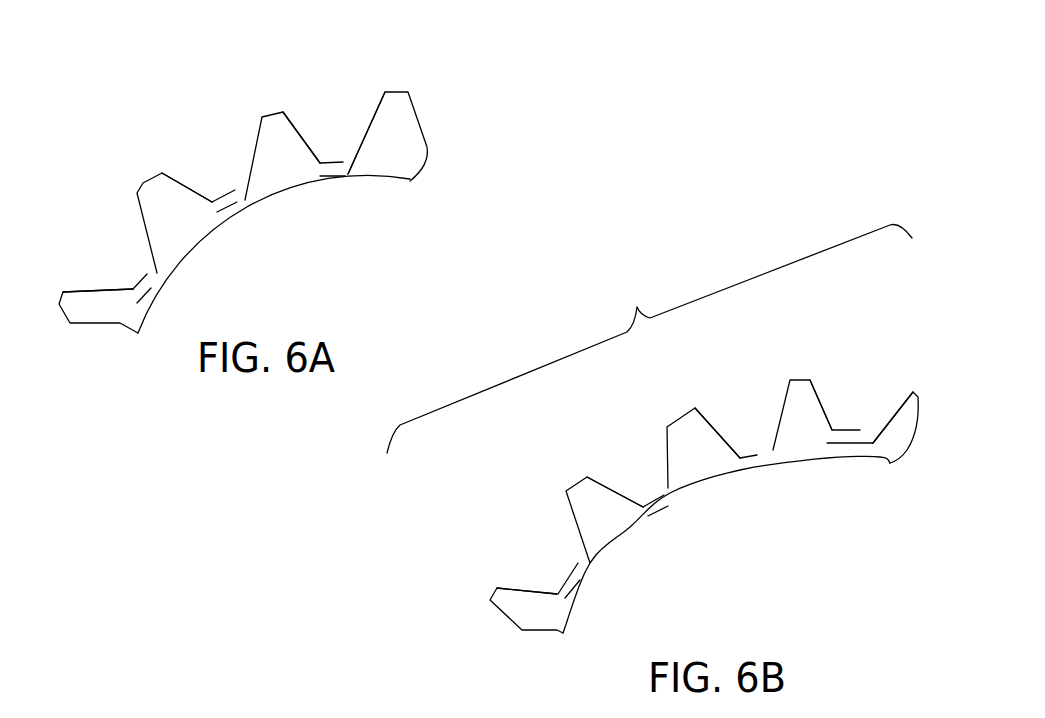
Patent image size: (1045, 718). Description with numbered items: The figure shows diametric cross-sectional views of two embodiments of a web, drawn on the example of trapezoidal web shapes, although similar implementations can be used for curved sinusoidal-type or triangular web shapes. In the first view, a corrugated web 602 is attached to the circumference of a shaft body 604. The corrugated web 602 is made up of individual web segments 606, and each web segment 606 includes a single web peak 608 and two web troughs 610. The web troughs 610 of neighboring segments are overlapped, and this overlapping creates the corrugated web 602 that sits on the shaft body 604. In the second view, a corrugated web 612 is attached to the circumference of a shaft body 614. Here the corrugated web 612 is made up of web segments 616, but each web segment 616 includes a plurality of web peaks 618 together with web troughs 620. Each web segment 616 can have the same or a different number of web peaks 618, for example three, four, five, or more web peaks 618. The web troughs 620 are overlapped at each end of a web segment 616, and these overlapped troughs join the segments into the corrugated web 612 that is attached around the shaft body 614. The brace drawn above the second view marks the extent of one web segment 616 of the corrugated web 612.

In FIG. 6A, the corrugated web 602 is at (415, 120).
In FIG. 6A, the shaft body 604 is at (197, 247).
In FIG. 6A, the web segment 606 is at (108, 288).
In FIG. 6A, the web peak 608 is at (63, 292).
In FIG. 6A, the web trough 610 is at (153, 288).
In FIG. 6B, the corrugated web 612 is at (649, 339).
In FIG. 6B, the shaft body 614 is at (627, 533).
In FIG. 6B, the web segment 616 is at (535, 587).
In FIG. 6B, the web peak 618 is at (495, 590).
In FIG. 6B, the web trough 620 is at (590, 577).